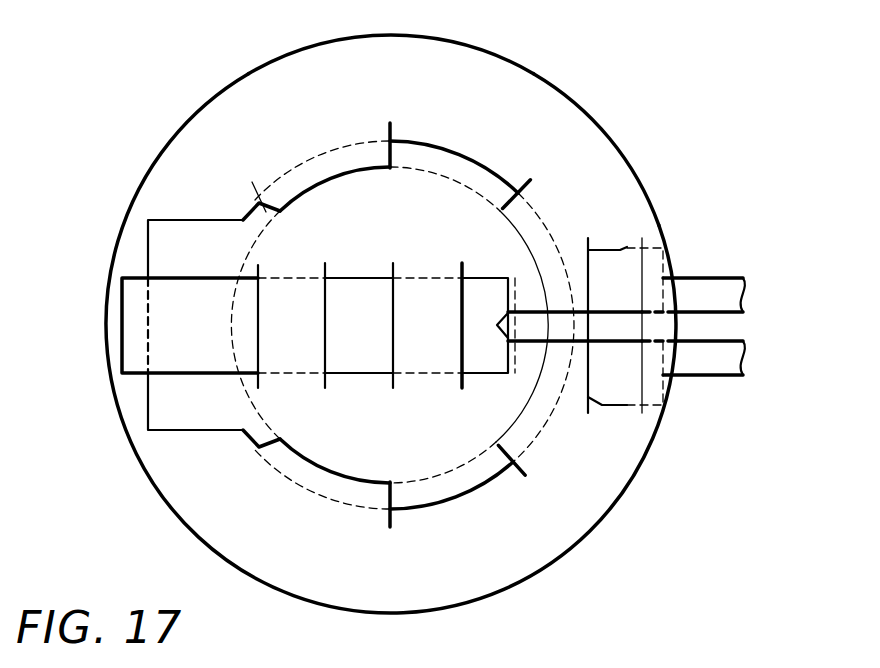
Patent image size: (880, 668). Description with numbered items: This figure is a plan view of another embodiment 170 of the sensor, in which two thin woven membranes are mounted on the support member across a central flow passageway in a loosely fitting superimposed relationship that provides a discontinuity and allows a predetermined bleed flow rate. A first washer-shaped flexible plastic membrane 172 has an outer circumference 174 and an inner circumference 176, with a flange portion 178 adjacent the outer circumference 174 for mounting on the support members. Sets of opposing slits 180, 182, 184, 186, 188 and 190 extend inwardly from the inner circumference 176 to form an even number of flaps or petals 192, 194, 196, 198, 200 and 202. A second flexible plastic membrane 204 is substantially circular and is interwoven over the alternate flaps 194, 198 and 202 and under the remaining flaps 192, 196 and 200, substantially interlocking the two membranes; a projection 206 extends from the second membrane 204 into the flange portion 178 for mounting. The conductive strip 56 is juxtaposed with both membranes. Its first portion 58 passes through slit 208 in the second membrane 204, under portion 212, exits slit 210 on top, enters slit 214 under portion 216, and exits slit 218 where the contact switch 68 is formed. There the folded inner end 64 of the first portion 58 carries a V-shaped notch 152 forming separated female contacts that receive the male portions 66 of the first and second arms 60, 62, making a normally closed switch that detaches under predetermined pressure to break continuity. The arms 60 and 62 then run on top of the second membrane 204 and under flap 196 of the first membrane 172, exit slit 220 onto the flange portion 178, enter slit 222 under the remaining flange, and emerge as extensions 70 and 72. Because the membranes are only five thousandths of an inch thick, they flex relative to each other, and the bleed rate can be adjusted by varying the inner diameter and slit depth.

The sensor embodiment 170 is at (383, 343).
The first washer-shaped flexible plastic membrane 172 is at (560, 88).
The outer circumference 174 is at (500, 60).
The flange portion 178 is at (583, 136).
The slit 180 is at (257, 201).
The slit 182 is at (518, 466).
The slit 184 is at (397, 147).
The slit 186 is at (395, 507).
The stop tab 188 is at (528, 186).
The slit 190 is at (270, 444).
The flap or petal 192 is at (325, 157).
The flap or petal 194 is at (468, 197).
The flap or petal 196 is at (508, 240).
The flap or petal 198 is at (440, 473).
The flap or petal 200 is at (343, 476).
The flap or petal 202 is at (250, 391).
The second flexible plastic membrane 204 is at (236, 205).
The projection 206 is at (160, 219).
The slit 208 is at (240, 362).
The slit 210 is at (327, 293).
The portion of second membrane 212 is at (291, 325).
The slit 214 is at (390, 355).
The portion of second membrane 216 is at (393, 325).
The slit 218 is at (463, 280).
The slit 220 is at (592, 242).
The slit 222 is at (600, 252).
The conductive strip 56 is at (135, 268).
The first portion of conductive strip 58 is at (190, 325).
The first arm 60 is at (608, 271).
The second arm 62 is at (608, 381).
The inner end 64 is at (490, 298).
The male portion 66 is at (545, 278).
The switch 68 is at (519, 385).
The extension 70 is at (710, 293).
The extension 72 is at (713, 356).
The V-shaped notch 152 is at (500, 345).
The inner circumference 176 is at (343, 176).